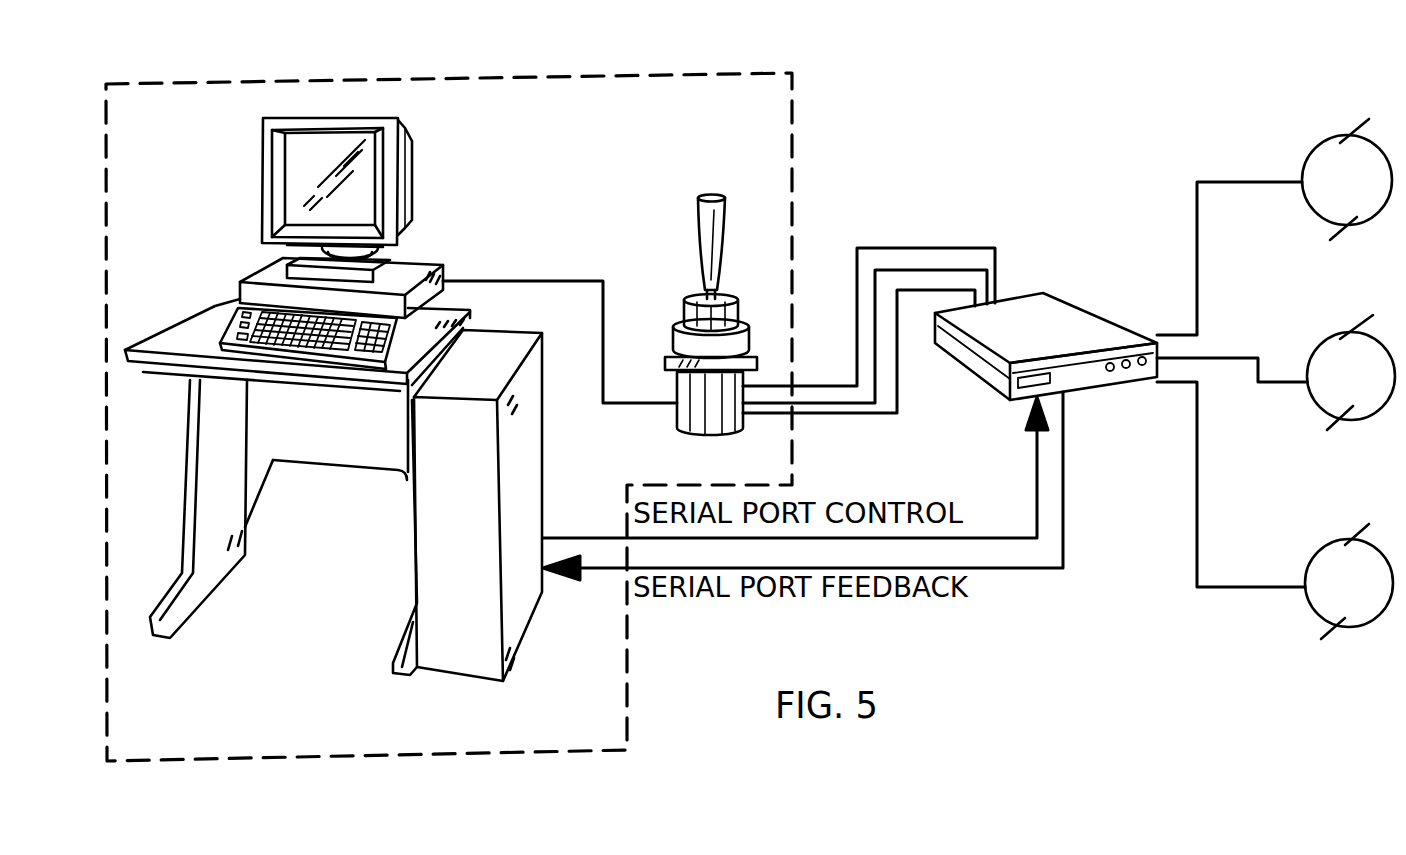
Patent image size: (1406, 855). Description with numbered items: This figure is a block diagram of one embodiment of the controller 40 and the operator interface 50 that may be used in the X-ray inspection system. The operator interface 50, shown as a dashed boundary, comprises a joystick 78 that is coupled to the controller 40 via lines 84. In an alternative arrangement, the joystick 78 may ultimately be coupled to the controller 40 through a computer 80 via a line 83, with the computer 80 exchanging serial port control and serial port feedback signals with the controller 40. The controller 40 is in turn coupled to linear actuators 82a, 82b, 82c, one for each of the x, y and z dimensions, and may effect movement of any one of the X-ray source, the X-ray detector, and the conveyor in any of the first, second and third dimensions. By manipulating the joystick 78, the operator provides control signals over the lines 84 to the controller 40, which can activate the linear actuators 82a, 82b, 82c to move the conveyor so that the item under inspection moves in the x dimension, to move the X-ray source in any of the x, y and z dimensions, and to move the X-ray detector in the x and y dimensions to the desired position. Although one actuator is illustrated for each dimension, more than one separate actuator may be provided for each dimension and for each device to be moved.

The operator interface 50 is at (793, 140).
The computer 80 is at (443, 258).
The line 83 is at (538, 273).
The joystick 78 is at (708, 190).
The lines 84 is at (870, 245).
The controller 40 is at (1047, 293).
The linear actuator 82a is at (1318, 215).
The linear actuator 82b is at (1316, 401).
The linear actuator 82c is at (1310, 566).